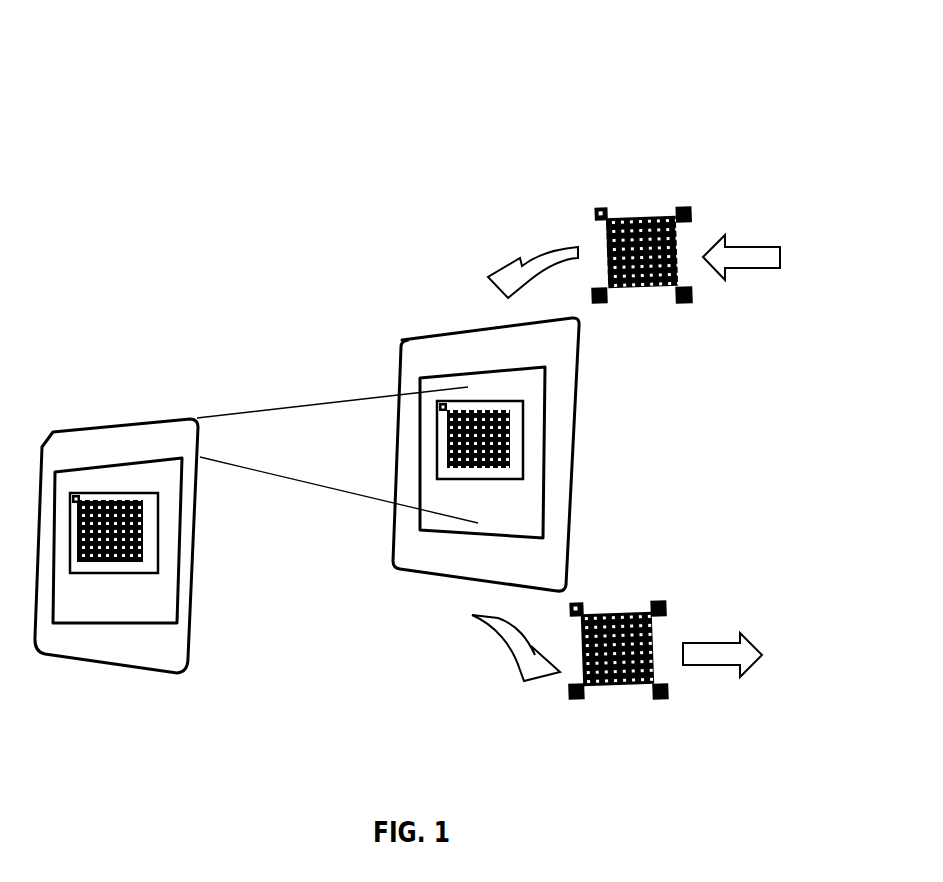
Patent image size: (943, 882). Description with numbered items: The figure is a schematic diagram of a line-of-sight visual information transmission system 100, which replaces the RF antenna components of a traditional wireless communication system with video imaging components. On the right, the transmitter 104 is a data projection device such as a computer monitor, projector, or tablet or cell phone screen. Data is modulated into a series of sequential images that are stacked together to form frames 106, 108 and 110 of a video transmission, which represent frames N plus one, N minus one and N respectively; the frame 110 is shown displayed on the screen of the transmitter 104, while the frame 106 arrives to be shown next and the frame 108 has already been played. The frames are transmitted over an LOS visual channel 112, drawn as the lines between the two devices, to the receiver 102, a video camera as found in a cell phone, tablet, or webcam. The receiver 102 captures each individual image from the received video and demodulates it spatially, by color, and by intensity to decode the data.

The LOS visual information transmission system 100 is at (765, 83).
The receiver 102 is at (108, 422).
The transmitter 104 is at (577, 437).
The frame 106 is at (658, 207).
The frame 108 is at (631, 598).
The frame 110 is at (533, 413).
The LOS visual channel 112 is at (278, 395).